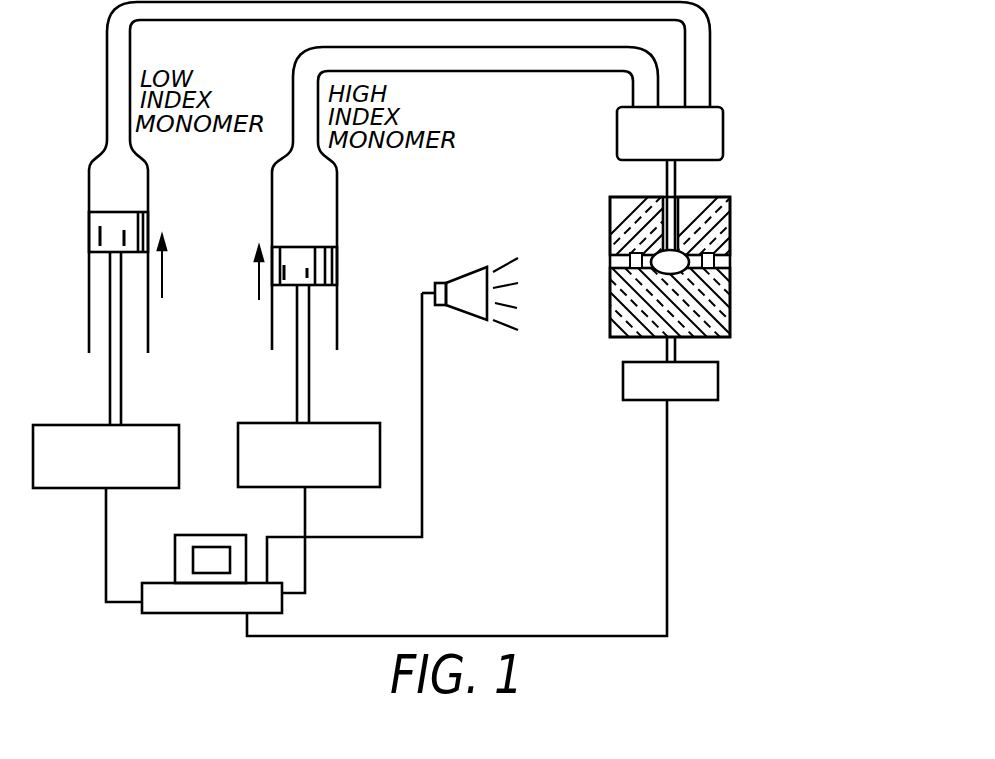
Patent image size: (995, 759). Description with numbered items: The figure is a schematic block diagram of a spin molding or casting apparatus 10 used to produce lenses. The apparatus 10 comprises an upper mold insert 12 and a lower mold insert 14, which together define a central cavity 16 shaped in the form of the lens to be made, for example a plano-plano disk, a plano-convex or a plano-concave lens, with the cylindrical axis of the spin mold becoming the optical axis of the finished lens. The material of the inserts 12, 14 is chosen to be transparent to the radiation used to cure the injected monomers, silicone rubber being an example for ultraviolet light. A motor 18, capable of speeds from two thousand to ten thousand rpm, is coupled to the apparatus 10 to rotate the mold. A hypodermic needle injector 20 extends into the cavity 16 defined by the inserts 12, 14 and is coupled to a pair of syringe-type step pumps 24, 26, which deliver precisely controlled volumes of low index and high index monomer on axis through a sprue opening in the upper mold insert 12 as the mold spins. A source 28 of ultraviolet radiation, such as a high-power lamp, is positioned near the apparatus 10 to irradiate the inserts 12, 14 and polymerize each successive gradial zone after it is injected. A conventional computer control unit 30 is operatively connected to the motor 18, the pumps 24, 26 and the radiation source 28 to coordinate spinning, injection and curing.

The spin molding apparatus 10 is at (687, 266).
The upper mold insert 12 is at (610, 240).
The lower mold insert 14 is at (610, 312).
The central cavity 16 is at (722, 226).
The motor 18 is at (718, 382).
The hypodermic needle injector 20 is at (675, 178).
The syringe-type step pump 24 is at (365, 423).
The syringe-type step pump 26 is at (165, 425).
The source of ultraviolet radiation 28 is at (465, 305).
The computer control unit 30 is at (145, 615).